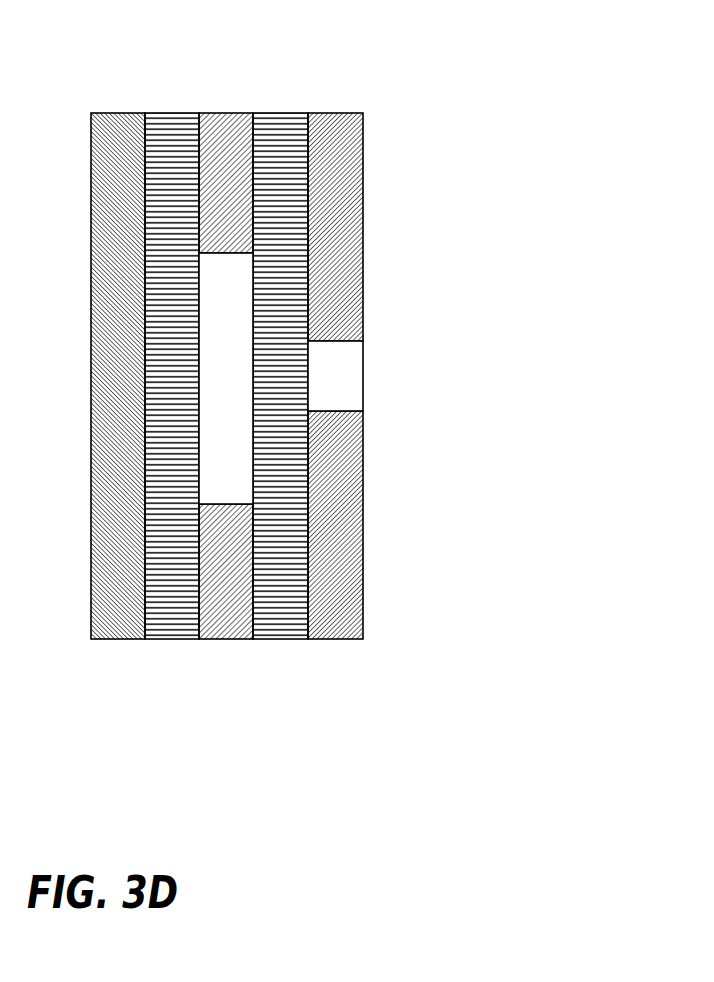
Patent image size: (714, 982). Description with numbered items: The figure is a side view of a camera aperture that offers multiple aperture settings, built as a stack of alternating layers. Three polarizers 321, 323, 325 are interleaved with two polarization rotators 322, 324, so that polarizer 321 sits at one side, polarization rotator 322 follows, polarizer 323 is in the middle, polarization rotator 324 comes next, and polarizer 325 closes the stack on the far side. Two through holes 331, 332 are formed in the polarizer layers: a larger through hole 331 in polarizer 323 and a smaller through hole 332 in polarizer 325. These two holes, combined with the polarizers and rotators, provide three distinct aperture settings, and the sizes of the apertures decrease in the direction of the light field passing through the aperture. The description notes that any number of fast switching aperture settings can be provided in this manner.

The polarizer 321 is at (102, 113).
The polarization rotator 322 is at (172, 640).
The polarizer 323 is at (240, 113).
The polarization rotator 324 is at (287, 640).
The polarizer 325 is at (348, 113).
The through hole 331 is at (220, 405).
The through hole 332 is at (330, 380).